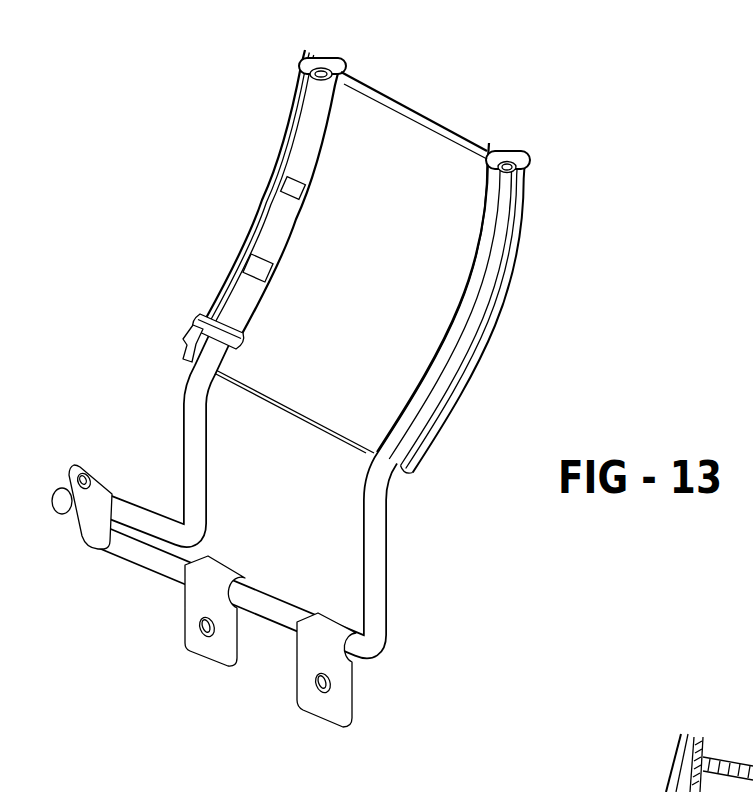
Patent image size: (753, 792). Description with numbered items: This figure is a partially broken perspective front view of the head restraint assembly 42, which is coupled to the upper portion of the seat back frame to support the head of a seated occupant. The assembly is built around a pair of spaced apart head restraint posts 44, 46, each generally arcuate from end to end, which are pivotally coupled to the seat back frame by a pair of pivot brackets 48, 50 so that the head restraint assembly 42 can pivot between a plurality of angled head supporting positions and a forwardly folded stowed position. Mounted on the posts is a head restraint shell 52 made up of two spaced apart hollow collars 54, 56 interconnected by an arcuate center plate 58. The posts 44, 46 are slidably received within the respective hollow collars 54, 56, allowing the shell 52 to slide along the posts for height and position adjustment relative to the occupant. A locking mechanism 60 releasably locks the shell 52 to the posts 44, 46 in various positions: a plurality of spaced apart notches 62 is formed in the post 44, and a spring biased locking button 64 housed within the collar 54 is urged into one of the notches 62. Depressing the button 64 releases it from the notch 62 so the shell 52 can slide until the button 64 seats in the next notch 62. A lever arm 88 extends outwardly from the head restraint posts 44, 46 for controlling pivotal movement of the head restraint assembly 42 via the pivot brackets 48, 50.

The head restraint assembly 42 is at (533, 190).
The head restraint post 44 is at (200, 443).
The head restraint post 46 is at (378, 582).
The pivot bracket 48 is at (182, 630).
The pivot bracket 50 is at (355, 703).
The head restraint shell 52 is at (294, 422).
The hollow collar 54 is at (296, 82).
The hollow collar 56 is at (490, 322).
The arcuate center plate 58 is at (445, 123).
The locking mechanism 60 is at (178, 336).
The notch 62 is at (237, 274).
The locking button 64 is at (200, 313).
The lever arm 88 is at (90, 461).